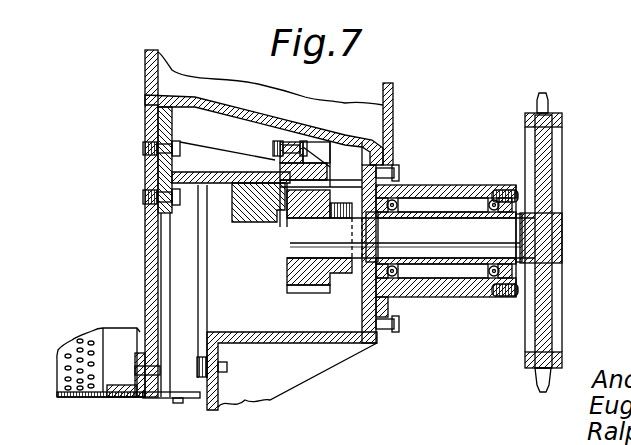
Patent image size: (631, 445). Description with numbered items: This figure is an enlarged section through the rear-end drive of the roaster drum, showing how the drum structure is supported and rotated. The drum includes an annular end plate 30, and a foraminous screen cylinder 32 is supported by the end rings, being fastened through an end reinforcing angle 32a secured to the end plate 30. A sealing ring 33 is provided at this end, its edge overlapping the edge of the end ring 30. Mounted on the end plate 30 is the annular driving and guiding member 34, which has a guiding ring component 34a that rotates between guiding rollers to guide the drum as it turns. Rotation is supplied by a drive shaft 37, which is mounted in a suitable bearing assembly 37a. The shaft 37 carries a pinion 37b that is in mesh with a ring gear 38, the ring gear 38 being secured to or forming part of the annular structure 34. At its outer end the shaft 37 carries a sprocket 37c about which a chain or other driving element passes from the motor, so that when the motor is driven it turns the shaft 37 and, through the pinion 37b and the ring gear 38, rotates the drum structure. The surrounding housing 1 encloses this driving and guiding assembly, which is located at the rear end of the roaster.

The housing box 1 is at (290, 343).
The annular end plate 30 is at (145, 272).
The foraminous screen cylinder 32 is at (83, 398).
The end reinforcing angle 32a is at (122, 380).
The sealing ring 33 is at (162, 398).
The annular driving and guiding member 34 is at (215, 173).
The guiding ring component 34a is at (265, 212).
The drive shaft 37 is at (445, 240).
The bearing assembly 37a is at (428, 190).
The pinion 37b is at (317, 287).
The sprocket 37c is at (545, 180).
The ring gear 38 is at (310, 170).